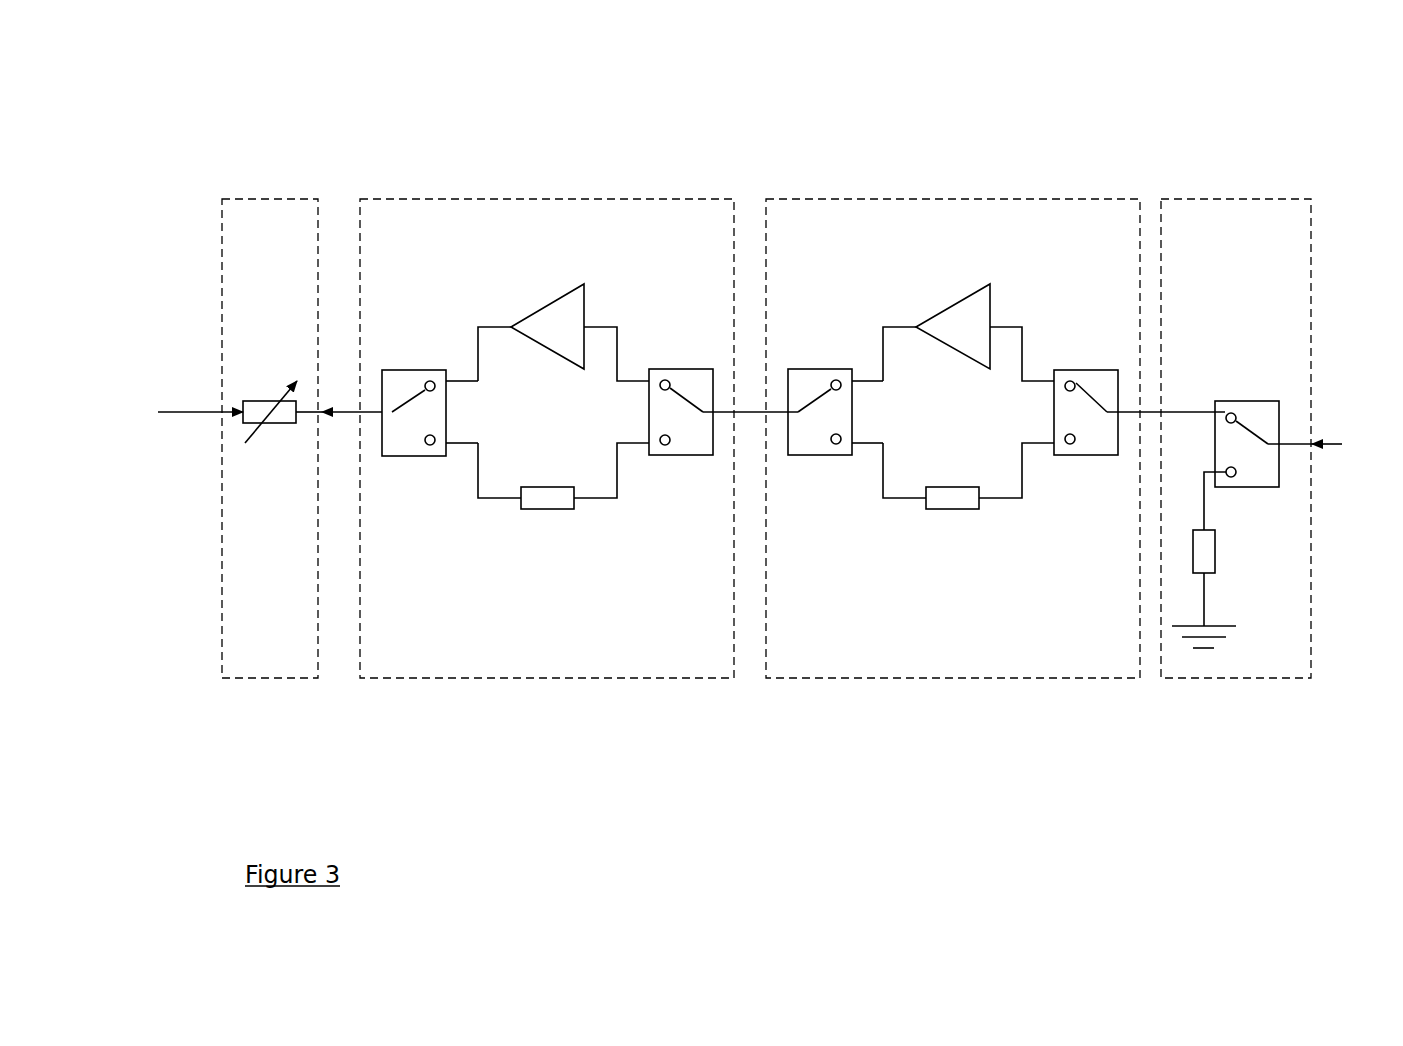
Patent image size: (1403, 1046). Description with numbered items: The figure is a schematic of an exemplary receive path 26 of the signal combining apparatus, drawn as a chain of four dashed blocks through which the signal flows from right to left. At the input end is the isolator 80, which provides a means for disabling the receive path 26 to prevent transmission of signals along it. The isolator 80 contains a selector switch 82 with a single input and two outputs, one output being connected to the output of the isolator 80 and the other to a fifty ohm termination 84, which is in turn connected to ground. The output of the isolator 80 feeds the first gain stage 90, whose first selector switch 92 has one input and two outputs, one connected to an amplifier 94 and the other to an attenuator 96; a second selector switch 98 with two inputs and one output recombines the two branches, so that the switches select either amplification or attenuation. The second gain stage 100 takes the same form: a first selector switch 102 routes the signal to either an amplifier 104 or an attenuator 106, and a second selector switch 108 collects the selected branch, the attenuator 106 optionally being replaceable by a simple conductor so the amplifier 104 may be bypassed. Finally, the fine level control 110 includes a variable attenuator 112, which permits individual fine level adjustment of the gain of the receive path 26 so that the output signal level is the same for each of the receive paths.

The receive path 26 is at (253, 90).
The isolator 80 is at (1182, 680).
The selector switch 82 is at (1268, 478).
The 50 ohm termination 84 is at (1205, 561).
The first gain stage 90 is at (787, 682).
The first selector switch 92 is at (1108, 445).
The amplifier 94 is at (948, 338).
The attenuator 96 is at (938, 498).
The second selector switch 98 is at (808, 444).
The second gain stage 100 is at (382, 680).
The first selector switch 102 is at (703, 445).
The amplifier 104 is at (542, 338).
The attenuator 106 is at (532, 498).
The second selector switch 108 is at (403, 445).
The fine level control 110 is at (243, 680).
The variable attenuator 112 is at (287, 413).